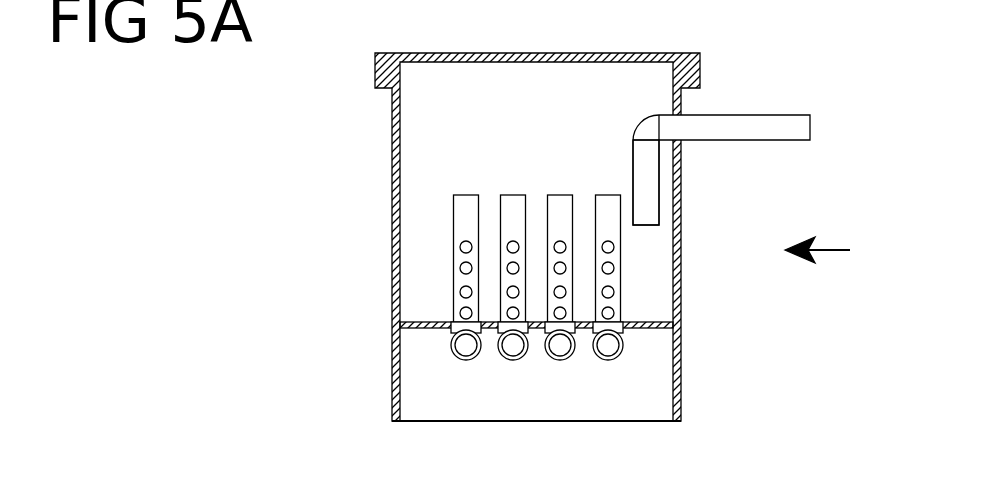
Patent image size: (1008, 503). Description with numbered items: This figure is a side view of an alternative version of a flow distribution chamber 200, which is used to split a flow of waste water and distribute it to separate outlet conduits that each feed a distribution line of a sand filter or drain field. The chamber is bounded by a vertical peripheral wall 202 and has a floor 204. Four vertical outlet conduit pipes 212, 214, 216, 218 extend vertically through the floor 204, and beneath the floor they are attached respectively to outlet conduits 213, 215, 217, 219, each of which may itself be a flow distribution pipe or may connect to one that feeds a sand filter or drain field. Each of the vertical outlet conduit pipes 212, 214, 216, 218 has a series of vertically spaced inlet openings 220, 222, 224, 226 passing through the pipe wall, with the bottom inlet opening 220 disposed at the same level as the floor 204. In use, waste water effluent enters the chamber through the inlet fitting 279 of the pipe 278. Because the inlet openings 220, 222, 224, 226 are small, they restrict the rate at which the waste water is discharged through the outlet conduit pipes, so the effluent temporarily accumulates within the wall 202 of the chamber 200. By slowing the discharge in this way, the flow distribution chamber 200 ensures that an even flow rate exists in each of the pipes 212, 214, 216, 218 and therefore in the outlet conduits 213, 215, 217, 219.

The flow distribution chamber 200 is at (852, 252).
The vertical peripheral wall 202 is at (680, 258).
The floor 204 is at (410, 321).
The vertical outlet conduit pipe 212 is at (472, 202).
The outlet conduit 213 is at (452, 353).
The vertical outlet conduit pipe 214 is at (510, 205).
The outlet conduit 215 is at (512, 360).
The vertical outlet conduit pipe 216 is at (557, 200).
The outlet conduit 217 is at (563, 360).
The vertical outlet conduit pipe 218 is at (603, 200).
The outlet conduit 219 is at (607, 360).
The inlet opening 220 is at (460, 310).
The inlet opening 222 is at (460, 289).
The inlet opening 224 is at (460, 265).
The inlet opening 226 is at (460, 243).
The pipe 278 is at (730, 128).
The inlet fitting 279 is at (650, 157).